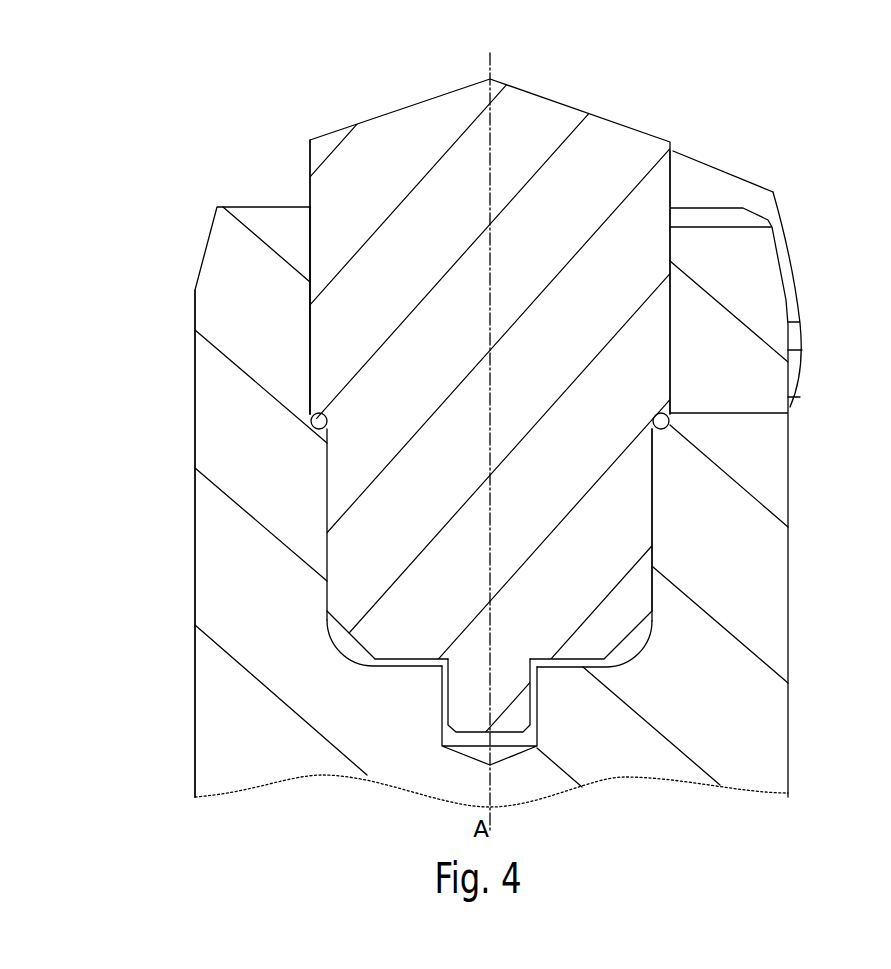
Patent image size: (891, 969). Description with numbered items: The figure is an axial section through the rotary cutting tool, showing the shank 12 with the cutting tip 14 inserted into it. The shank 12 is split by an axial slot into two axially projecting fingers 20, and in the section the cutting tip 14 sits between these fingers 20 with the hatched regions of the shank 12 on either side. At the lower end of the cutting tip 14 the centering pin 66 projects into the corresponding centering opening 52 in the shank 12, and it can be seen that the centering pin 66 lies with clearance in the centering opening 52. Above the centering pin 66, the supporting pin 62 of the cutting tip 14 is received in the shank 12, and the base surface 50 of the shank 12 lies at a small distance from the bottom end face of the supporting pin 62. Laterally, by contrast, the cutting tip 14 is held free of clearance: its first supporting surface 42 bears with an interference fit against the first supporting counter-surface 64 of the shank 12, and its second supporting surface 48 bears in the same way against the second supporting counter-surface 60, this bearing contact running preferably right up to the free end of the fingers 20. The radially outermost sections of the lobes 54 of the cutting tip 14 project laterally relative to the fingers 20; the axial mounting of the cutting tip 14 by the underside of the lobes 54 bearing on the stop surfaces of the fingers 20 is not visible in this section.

The shank 12 is at (172, 701).
The cutting tip 14 is at (622, 98).
The fingers 20 is at (210, 437).
The first supporting surface 42 is at (650, 537).
The second supporting surface 48 is at (318, 250).
The base surface 50 is at (583, 668).
The centering opening 52 is at (441, 737).
The lobes 54 is at (801, 336).
The second supporting counter-surface 60 is at (306, 299).
The supporting pin 62 is at (398, 550).
The first supporting counter-surface 64 is at (660, 477).
The centering pin 66 is at (516, 712).